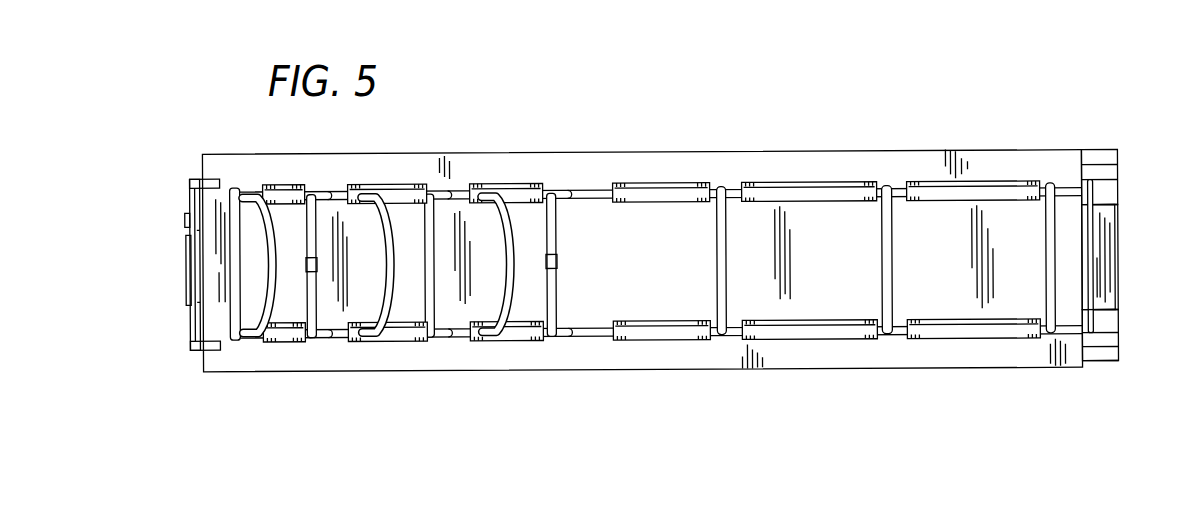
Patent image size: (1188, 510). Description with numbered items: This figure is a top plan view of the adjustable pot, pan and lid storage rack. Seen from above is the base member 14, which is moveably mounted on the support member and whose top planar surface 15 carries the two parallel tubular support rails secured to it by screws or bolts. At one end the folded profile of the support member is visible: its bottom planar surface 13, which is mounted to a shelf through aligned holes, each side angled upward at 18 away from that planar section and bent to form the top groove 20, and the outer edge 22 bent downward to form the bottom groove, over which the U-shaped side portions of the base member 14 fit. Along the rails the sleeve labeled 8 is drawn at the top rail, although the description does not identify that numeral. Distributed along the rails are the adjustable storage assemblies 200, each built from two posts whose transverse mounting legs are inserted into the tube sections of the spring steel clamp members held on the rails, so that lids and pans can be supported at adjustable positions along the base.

The guide sleeve 8 is at (821, 183).
The bottom planar surface 13 is at (1124, 257).
The base member 14 is at (832, 360).
The top planar surface 15 is at (656, 261).
The angled side 18 is at (1118, 194).
The top groove 20 is at (1112, 341).
The outer edge 22 is at (1099, 373).
The adjustable storage assemblies 200 is at (395, 342).